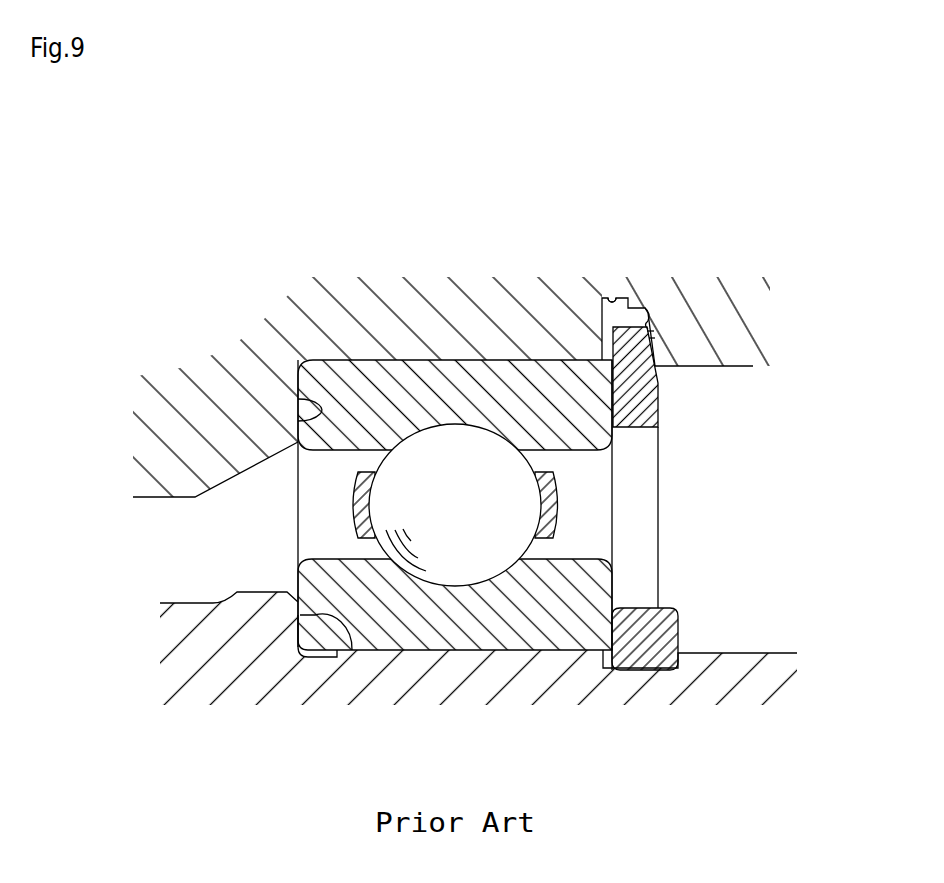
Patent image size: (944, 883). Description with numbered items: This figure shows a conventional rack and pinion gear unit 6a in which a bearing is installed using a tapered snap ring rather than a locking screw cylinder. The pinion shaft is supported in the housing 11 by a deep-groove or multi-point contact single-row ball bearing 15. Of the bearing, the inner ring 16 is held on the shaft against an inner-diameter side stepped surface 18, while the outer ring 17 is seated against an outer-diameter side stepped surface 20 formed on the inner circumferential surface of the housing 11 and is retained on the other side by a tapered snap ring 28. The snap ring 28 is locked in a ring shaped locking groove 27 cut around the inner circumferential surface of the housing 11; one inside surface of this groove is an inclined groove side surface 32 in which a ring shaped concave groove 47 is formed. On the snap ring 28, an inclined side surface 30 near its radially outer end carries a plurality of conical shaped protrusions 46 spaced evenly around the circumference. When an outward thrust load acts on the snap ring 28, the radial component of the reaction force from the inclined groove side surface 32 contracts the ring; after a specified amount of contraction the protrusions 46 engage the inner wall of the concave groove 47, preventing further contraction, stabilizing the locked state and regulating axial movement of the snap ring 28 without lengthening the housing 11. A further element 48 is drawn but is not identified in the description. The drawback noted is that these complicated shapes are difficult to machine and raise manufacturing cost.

The rack and pinion gear unit 6a is at (305, 263).
The housing 11 is at (742, 358).
The ball bearing 15 is at (363, 352).
The inner ring 16 is at (582, 600).
The outer ring 17 is at (582, 433).
The inner-diameter side stepped surface 18 is at (326, 624).
The outer-diameter side stepped surface 20 is at (318, 419).
The locking groove 27 is at (610, 296).
The tapered snap ring 28 is at (668, 417).
The inclined side surface 30 is at (651, 347).
The inclined groove side surface 32 is at (657, 380).
The conical shaped protrusions 46 is at (646, 328).
The ring shaped concave groove 47 is at (641, 302).
The contact surface 48 is at (650, 330).